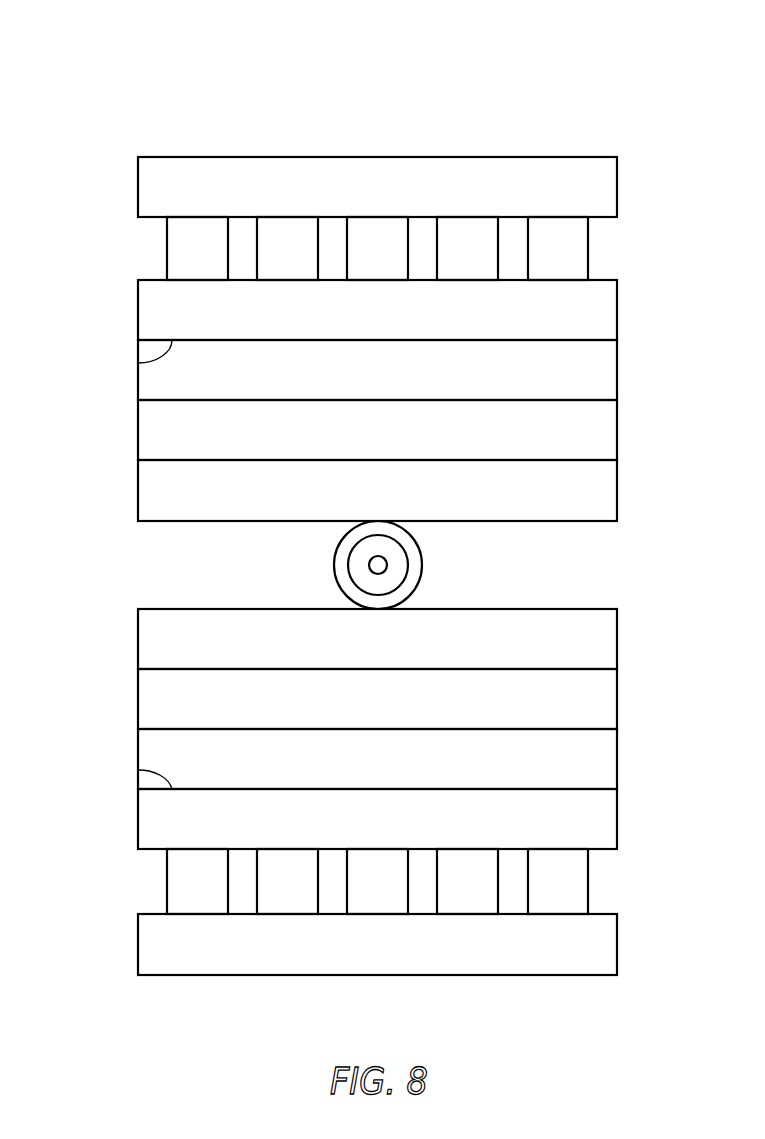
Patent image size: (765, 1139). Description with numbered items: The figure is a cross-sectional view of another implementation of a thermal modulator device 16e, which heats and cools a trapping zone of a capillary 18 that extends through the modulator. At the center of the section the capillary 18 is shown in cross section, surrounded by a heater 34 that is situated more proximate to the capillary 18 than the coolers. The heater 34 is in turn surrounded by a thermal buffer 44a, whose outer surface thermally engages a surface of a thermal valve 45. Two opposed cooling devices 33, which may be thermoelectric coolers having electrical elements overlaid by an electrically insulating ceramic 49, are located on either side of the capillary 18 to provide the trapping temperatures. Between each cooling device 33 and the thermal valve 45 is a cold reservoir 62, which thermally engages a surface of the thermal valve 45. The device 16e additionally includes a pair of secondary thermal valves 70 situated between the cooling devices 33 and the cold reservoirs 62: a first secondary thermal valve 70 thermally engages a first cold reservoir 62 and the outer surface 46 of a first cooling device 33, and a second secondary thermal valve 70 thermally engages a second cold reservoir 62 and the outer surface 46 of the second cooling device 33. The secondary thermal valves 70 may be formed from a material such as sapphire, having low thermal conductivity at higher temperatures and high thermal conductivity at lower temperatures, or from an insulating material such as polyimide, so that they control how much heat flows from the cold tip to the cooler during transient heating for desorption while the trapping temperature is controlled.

The thermal modulator device 16e is at (104, 60).
The cooling device 33 is at (125, 157).
The electrically insulating ceramic 49 is at (617, 300).
The secondary thermal valve 70 is at (617, 360).
The cold reservoir 62 is at (617, 417).
The thermal valve 45 is at (617, 473).
The outer surface 46 is at (138, 363).
The thermal buffer 44a is at (338, 538).
The heater 34 is at (349, 580).
The capillary 18 is at (382, 571).